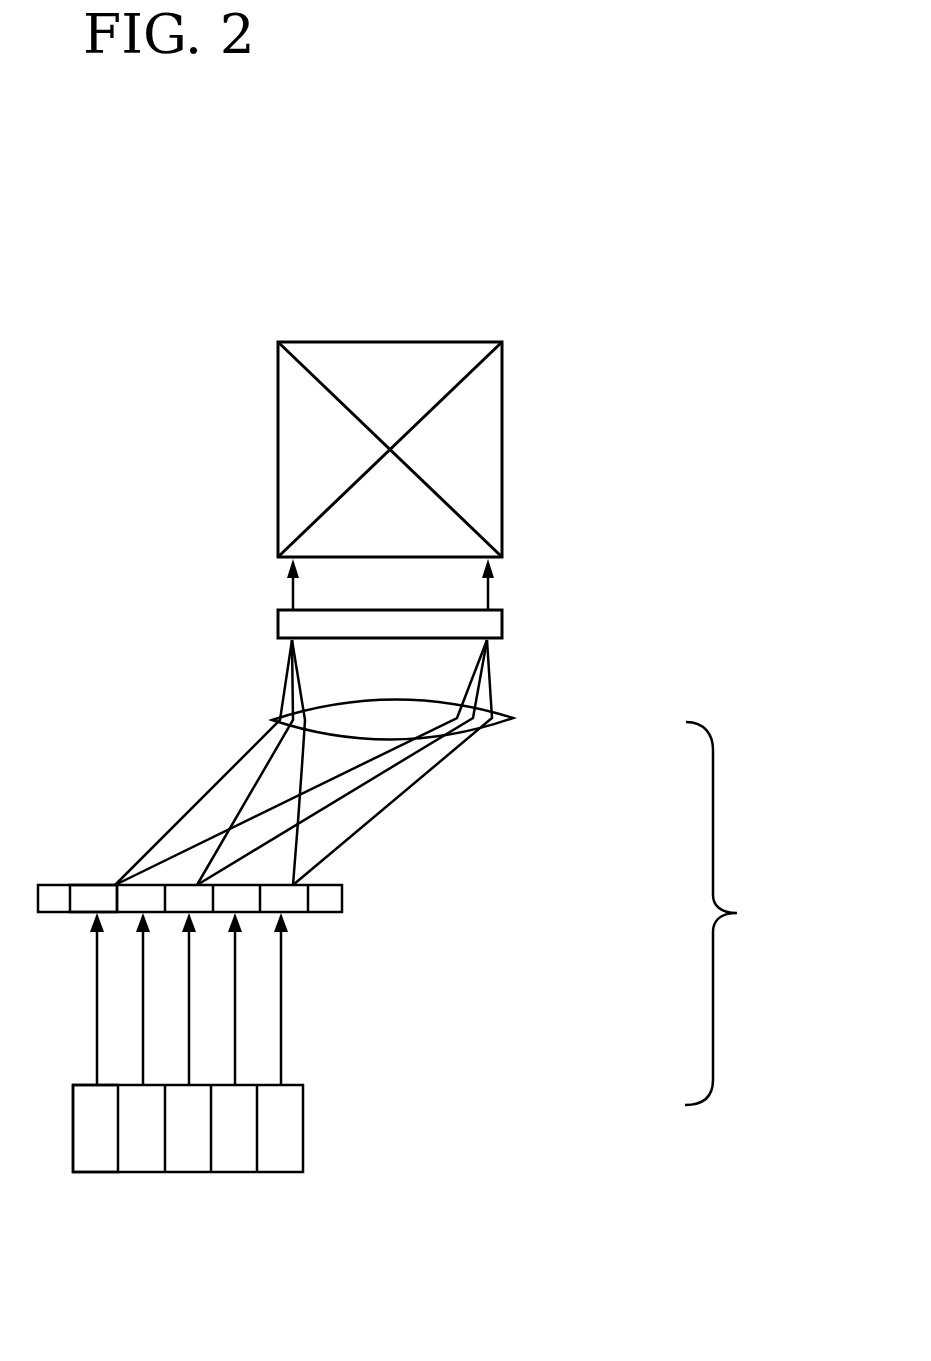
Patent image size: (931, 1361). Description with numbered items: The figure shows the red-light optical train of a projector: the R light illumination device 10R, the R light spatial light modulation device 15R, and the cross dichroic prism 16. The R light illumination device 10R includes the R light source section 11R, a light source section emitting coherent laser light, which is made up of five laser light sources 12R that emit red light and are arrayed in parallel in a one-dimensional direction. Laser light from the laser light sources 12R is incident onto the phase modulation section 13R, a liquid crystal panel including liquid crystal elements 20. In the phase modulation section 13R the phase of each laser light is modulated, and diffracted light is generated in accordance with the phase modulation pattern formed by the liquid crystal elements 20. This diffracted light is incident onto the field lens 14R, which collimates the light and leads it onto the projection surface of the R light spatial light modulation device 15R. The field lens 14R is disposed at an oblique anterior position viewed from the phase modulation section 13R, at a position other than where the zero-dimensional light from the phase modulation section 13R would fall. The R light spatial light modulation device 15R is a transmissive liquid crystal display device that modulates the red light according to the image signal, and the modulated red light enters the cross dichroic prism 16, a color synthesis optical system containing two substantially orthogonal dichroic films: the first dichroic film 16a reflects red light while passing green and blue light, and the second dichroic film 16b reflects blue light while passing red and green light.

The R light illumination device 10R is at (741, 913).
The R light source section 11R is at (259, 1174).
The laser light source 12R is at (98, 1158).
The phase modulation section 13R is at (249, 851).
The liquid crystal element 20 is at (80, 890).
The field lens 14R is at (513, 720).
The R light spatial light modulation device 15R is at (503, 618).
The cross dichroic prism 16 is at (393, 365).
The first dichroic film 16a is at (467, 518).
The second dichroic film 16b is at (467, 377).